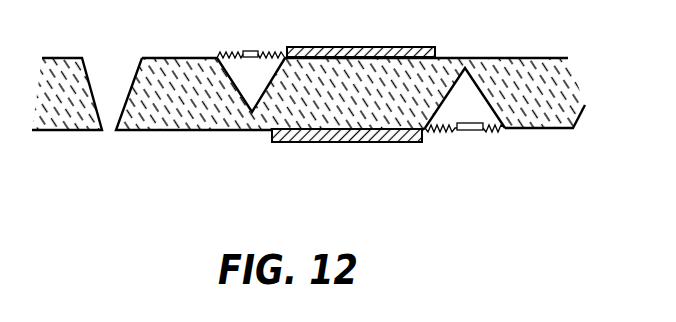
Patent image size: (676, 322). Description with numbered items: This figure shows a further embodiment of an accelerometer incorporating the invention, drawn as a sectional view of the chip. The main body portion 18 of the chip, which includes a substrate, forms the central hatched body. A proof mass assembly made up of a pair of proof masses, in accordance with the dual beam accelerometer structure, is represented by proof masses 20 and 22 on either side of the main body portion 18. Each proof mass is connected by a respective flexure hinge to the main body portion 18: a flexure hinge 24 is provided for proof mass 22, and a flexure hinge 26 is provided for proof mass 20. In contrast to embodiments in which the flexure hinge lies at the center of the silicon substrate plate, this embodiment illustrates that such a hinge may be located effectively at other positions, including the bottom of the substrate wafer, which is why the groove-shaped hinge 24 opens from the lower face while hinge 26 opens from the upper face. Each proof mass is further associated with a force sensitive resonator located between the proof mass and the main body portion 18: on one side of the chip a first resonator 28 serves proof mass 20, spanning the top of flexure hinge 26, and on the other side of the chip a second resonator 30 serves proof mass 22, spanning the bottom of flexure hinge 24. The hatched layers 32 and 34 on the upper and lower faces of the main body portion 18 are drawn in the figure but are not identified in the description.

The main body portion 18 is at (428, 75).
The proof mass 20 is at (160, 58).
The proof mass 22 is at (528, 70).
The flexure hinge 24 is at (465, 60).
The flexure hinge 26 is at (252, 122).
The first resonator 28 is at (243, 51).
The second resonator 30 is at (485, 131).
The upper cover layer 32 is at (388, 48).
The lower cover layer 34 is at (313, 142).